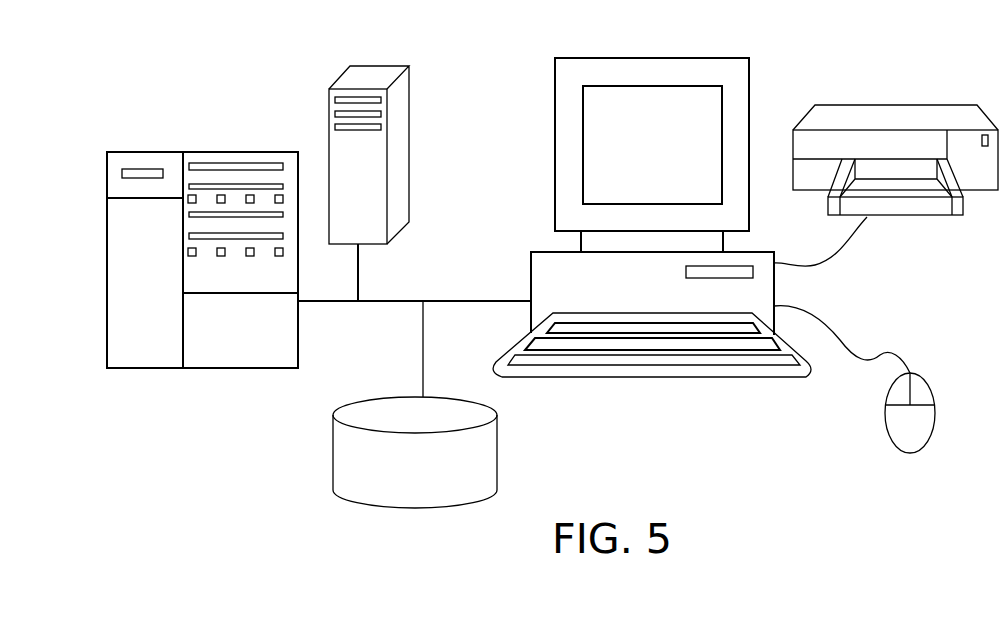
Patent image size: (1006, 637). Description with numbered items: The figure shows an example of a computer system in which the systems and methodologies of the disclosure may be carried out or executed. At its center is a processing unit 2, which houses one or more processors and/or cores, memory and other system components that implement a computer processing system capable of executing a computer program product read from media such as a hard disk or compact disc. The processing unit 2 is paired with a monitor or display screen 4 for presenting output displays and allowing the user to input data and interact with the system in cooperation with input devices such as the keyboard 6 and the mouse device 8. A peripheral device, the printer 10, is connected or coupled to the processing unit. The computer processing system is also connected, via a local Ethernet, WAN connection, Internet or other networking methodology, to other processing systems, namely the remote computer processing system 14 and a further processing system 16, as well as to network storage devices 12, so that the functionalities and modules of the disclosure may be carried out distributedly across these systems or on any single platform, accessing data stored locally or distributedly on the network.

The processing unit 2 is at (540, 274).
The monitor or display screen 4 is at (670, 58).
The keyboard 6 is at (700, 378).
The mouse device 8 is at (934, 432).
The printer 10 is at (903, 105).
The network storage devices 12 is at (333, 457).
The remote computer processing system 14 is at (409, 131).
The processing system 16 is at (255, 152).